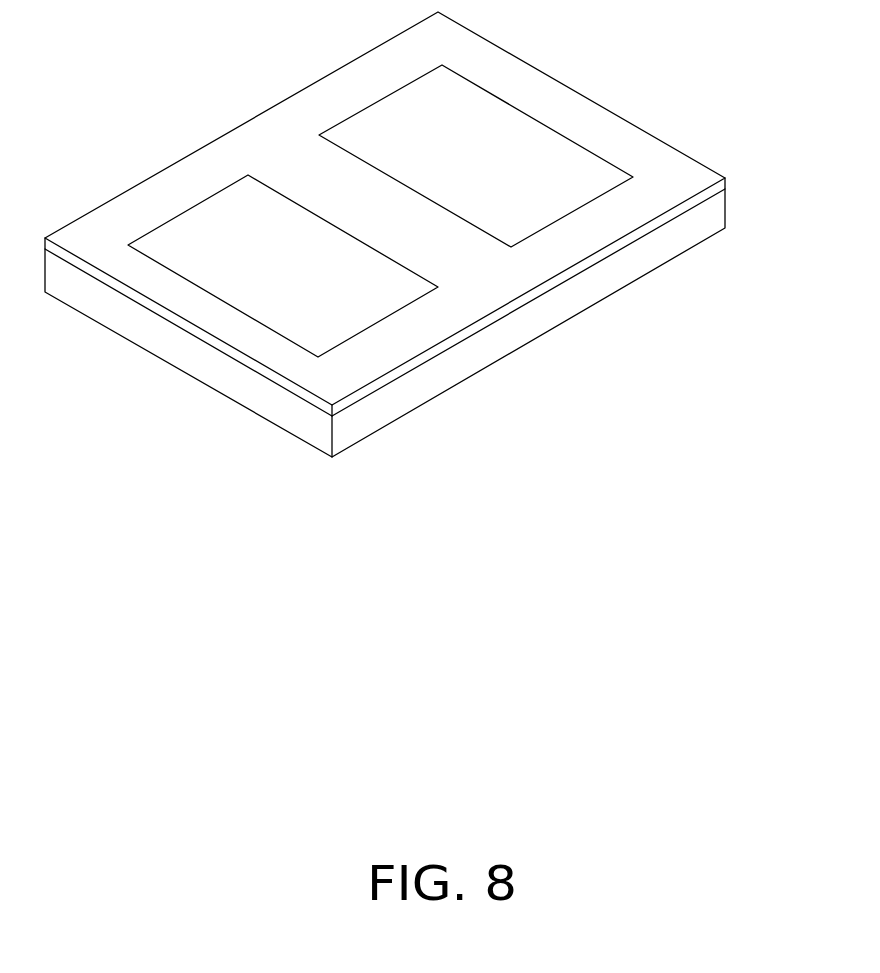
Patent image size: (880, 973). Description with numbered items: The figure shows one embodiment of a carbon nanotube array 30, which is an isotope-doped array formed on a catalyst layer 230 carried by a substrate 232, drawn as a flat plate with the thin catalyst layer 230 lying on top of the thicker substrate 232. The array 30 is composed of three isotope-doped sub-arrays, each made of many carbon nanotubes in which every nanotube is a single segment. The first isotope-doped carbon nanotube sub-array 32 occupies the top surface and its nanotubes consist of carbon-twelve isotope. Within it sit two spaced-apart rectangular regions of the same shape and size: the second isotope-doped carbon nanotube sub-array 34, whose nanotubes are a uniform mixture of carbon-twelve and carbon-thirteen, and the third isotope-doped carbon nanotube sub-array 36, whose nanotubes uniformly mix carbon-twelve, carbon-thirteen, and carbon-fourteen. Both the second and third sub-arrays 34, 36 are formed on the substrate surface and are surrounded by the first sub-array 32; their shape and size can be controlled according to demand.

The carbon nanotube array 30 is at (396, 251).
The first isotope-doped carbon nanotube sub-array 32 is at (627, 153).
The second isotope-doped carbon nanotube sub-array 34 is at (517, 208).
The third isotope-doped carbon nanotube sub-array 36 is at (348, 310).
The catalyst layer 230 is at (238, 356).
The substrate 232 is at (282, 410).